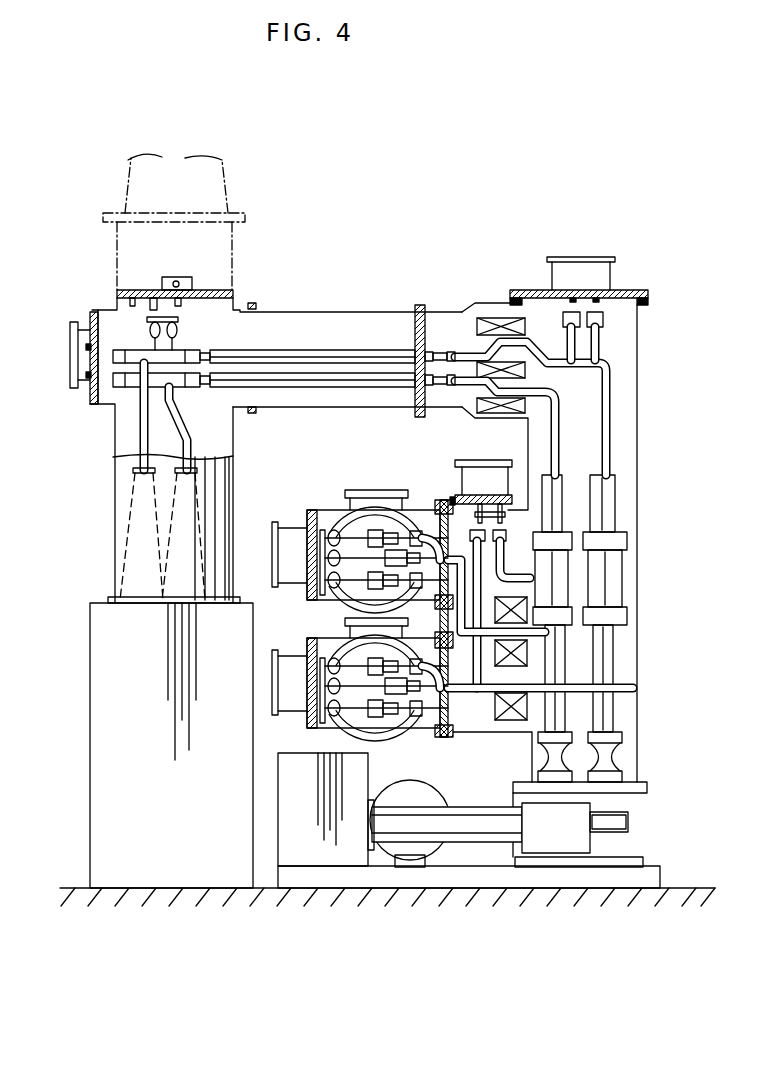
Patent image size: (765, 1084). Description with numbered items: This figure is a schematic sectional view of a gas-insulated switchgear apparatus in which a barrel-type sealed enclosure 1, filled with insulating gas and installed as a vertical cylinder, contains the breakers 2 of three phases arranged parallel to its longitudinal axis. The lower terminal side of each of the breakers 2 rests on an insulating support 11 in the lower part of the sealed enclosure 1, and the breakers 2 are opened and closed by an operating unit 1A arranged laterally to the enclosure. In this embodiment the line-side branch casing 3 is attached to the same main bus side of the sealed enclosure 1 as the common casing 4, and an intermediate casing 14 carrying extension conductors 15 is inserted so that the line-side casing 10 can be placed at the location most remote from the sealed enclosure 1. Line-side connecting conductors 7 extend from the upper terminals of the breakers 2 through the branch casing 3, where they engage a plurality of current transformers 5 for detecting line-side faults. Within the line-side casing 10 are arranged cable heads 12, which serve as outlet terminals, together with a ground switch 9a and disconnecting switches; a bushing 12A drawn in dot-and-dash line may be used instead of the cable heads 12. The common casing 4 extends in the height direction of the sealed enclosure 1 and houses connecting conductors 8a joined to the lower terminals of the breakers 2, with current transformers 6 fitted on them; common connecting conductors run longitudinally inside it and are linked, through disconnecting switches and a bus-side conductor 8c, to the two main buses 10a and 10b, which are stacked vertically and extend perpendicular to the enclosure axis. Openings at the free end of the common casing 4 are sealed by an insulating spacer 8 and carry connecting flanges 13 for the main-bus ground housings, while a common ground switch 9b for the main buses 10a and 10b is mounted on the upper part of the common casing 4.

The sealed enclosure 1 is at (637, 523).
The operating unit 1A is at (352, 775).
The breakers 2 is at (622, 585).
The branch casing 3 is at (462, 308).
The common casing 4 is at (472, 737).
The current transformers 5 is at (493, 318).
The current transformers 6 is at (508, 722).
The line-side connecting conductors 7 is at (540, 347).
The insulating spacer 8 is at (445, 740).
The connecting conductors 8a is at (573, 690).
The bus-side conductor 8c is at (462, 565).
The ground switch 9a is at (605, 272).
The common ground switch 9b is at (482, 460).
The line-side casing 10 is at (113, 477).
The main bus 10a is at (322, 510).
The main bus 10b is at (328, 640).
The insulating support 11 is at (623, 745).
The cable heads 12 is at (130, 540).
The bushing 12A is at (220, 205).
The connecting flanges 13 is at (440, 500).
The intermediate casing 14 is at (318, 295).
The extension conductors 15 is at (285, 355).